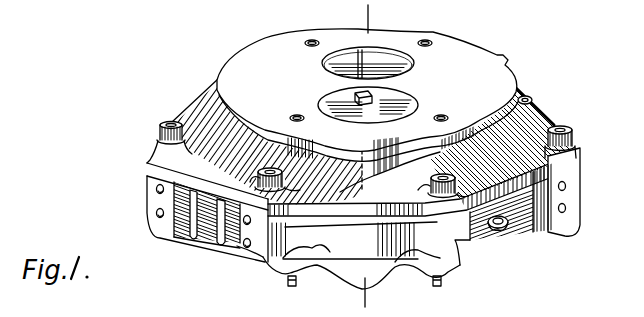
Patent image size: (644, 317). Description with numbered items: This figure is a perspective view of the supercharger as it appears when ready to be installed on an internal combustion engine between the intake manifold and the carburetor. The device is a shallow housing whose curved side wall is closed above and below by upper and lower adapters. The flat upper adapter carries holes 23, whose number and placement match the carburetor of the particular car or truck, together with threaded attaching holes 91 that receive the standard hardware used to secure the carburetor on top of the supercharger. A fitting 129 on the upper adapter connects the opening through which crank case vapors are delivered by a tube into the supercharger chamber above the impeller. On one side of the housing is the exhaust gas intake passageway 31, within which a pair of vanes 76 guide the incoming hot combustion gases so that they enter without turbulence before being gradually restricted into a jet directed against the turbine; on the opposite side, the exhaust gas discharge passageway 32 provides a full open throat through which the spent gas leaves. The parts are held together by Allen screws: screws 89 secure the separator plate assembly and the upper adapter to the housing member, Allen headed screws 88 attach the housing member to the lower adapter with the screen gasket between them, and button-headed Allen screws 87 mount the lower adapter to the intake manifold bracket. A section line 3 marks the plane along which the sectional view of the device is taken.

The section line 3- 3 is at (360, 17).
The holes 23 is at (382, 52).
The threaded attaching holes 91 is at (426, 40).
The fitting 129 is at (527, 100).
The Allen screws 89 is at (158, 125).
The exhaust gas discharge passageway 32 is at (548, 200).
The Allen headed screws 88 is at (507, 228).
The exhaust gas intake passageway 31 is at (173, 237).
The vanes 76 is at (226, 238).
The button-headed Allen screws 87 is at (294, 286).